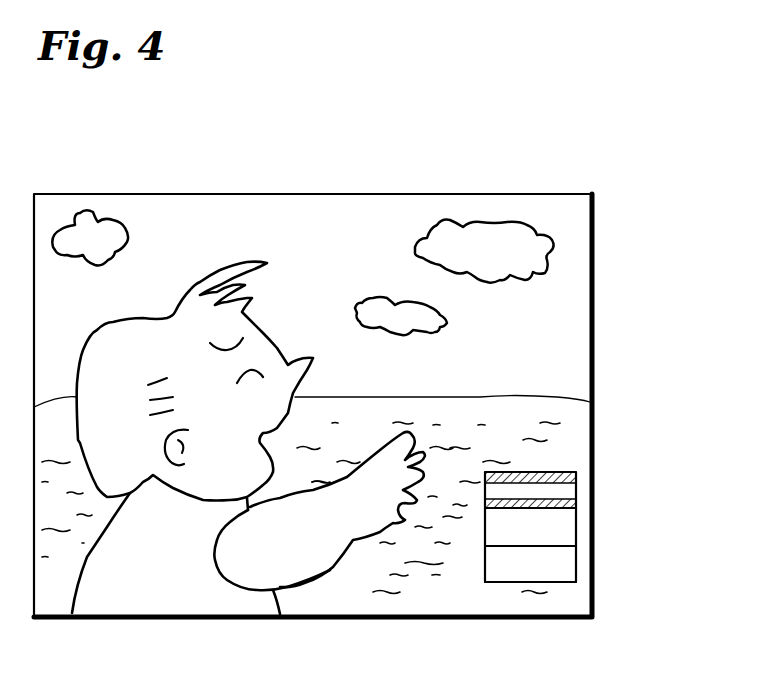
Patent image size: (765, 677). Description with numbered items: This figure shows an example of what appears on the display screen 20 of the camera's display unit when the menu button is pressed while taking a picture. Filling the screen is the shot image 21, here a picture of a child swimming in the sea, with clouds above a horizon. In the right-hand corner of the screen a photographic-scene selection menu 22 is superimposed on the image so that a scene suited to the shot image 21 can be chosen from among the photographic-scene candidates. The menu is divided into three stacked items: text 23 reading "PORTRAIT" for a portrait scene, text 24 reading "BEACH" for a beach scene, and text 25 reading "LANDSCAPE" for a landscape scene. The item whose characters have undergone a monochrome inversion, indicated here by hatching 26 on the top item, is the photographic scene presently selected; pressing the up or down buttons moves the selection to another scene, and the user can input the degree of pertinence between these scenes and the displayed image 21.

The display screen 20 is at (578, 229).
The shot image 21 is at (343, 237).
The photographic-scene selection menu 22 is at (550, 463).
The text reading "PORTRAIT" 23 is at (575, 503).
The text reading "BEACH" 24 is at (568, 536).
The text reading "LANDSCAPE" 25 is at (568, 577).
The hatching 26 is at (577, 475).